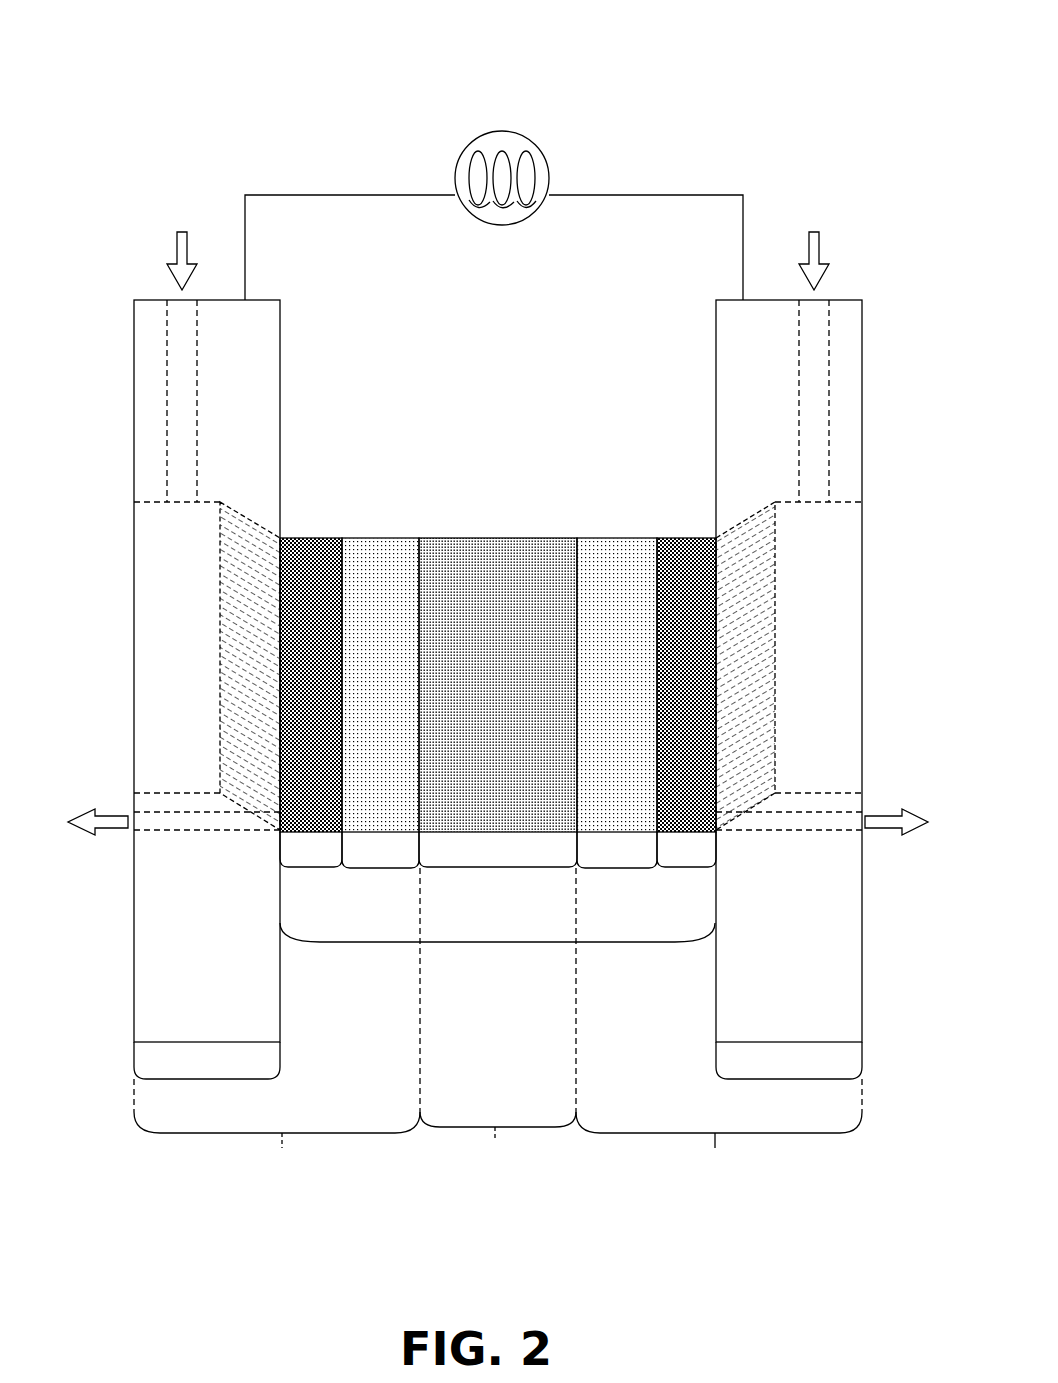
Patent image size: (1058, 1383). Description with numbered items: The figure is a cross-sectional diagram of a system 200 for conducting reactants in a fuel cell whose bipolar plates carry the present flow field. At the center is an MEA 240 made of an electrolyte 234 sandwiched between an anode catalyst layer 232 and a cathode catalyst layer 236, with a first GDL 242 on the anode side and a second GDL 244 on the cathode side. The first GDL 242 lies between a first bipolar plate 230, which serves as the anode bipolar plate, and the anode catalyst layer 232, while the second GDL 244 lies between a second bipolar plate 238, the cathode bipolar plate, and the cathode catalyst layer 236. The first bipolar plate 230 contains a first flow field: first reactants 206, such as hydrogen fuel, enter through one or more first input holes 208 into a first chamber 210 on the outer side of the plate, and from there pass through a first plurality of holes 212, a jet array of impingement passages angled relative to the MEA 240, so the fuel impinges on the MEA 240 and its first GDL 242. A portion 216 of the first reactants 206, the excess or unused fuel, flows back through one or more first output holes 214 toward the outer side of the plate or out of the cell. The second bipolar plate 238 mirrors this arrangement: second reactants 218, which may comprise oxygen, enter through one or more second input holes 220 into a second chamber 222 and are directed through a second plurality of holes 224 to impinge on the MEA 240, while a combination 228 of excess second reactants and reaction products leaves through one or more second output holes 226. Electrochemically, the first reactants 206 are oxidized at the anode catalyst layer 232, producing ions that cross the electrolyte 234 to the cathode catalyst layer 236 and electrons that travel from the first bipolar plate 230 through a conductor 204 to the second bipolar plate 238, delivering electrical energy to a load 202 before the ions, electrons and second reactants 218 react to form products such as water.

The system 200 is at (205, 36).
The load 202 is at (489, 132).
The conductor 204 is at (403, 194).
The first reactants 206 is at (178, 230).
The first input holes 208 is at (198, 382).
The first chamber 210 is at (207, 500).
The first plurality of holes 212 is at (262, 518).
The first output holes 214 is at (222, 832).
The portion of the first reactants 216 is at (108, 815).
The second reactants 218 is at (820, 228).
The second input holes 220 is at (800, 382).
The second chamber 222 is at (790, 500).
The second plurality of holes 224 is at (722, 516).
The second output holes 226 is at (772, 832).
The combination 228 is at (890, 815).
The first bipolar plate 230 is at (206, 1079).
The anode catalyst layer 232 is at (380, 868).
The electrolyte 234 is at (497, 867).
The cathode catalyst layer 236 is at (617, 868).
The second bipolar plate 238 is at (786, 1079).
The MEA 240 is at (493, 942).
The first GDL 242 is at (310, 867).
The second GDL 244 is at (685, 867).